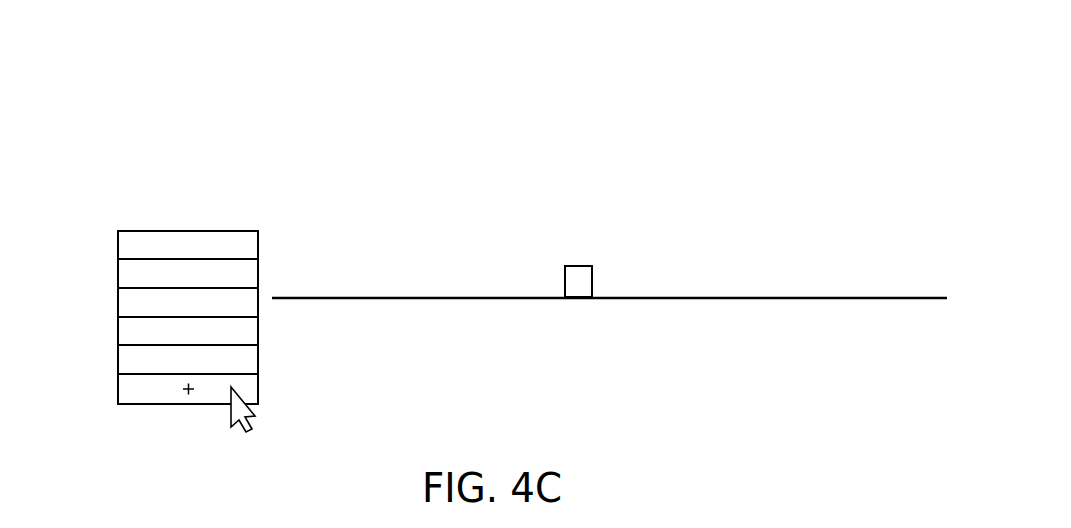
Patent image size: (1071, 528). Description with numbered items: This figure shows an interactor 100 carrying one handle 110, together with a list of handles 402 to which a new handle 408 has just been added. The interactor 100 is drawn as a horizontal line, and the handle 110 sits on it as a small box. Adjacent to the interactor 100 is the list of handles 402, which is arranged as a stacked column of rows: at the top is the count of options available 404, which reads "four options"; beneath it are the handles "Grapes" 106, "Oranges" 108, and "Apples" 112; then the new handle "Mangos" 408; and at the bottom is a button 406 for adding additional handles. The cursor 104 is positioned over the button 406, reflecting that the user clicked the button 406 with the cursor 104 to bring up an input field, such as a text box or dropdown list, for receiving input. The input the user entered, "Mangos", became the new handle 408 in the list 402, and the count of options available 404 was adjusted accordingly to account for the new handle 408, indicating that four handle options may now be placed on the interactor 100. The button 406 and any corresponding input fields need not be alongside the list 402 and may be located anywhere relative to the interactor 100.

The list of handles 402 is at (243, 206).
The count of options available 404 is at (118, 237).
The handle 106 is at (118, 272).
The handle 108 is at (118, 307).
The handle 112 is at (118, 334).
The new handle 408 is at (118, 363).
The button 406 is at (118, 398).
The cursor 104 is at (255, 420).
The interactor 100 is at (890, 298).
The handle 110 is at (580, 266).